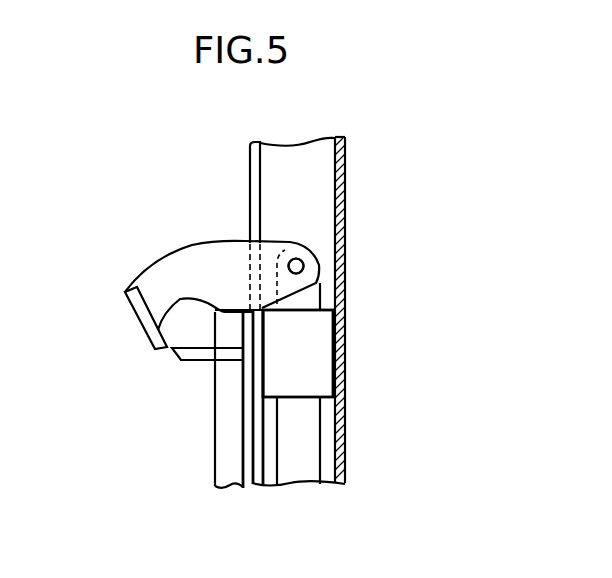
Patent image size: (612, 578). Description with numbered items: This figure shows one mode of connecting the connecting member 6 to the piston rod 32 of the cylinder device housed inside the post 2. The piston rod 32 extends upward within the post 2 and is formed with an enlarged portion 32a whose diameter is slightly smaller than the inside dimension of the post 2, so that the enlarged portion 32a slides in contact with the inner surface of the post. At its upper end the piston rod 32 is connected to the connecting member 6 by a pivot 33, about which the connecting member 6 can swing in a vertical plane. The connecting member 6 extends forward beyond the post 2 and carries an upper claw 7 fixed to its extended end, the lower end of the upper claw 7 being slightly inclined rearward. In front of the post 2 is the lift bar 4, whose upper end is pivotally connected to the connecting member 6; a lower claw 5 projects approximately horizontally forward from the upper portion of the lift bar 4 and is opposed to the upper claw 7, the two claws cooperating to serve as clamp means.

The post 2 is at (346, 158).
The lift bar 4 is at (227, 438).
The lower claw 5 is at (190, 356).
The connecting member 6 is at (192, 246).
The upper claw 7 is at (141, 321).
The piston rod 32 is at (310, 456).
The enlarged portion 32a is at (308, 355).
The pivot 33 is at (302, 263).